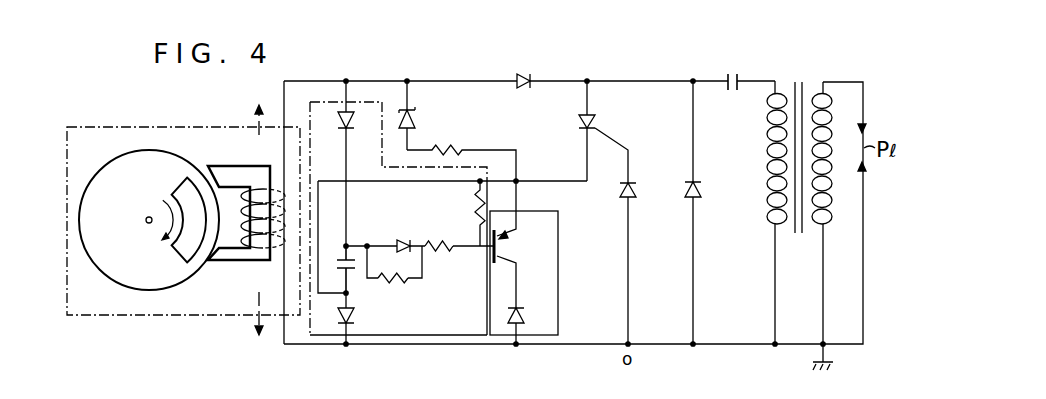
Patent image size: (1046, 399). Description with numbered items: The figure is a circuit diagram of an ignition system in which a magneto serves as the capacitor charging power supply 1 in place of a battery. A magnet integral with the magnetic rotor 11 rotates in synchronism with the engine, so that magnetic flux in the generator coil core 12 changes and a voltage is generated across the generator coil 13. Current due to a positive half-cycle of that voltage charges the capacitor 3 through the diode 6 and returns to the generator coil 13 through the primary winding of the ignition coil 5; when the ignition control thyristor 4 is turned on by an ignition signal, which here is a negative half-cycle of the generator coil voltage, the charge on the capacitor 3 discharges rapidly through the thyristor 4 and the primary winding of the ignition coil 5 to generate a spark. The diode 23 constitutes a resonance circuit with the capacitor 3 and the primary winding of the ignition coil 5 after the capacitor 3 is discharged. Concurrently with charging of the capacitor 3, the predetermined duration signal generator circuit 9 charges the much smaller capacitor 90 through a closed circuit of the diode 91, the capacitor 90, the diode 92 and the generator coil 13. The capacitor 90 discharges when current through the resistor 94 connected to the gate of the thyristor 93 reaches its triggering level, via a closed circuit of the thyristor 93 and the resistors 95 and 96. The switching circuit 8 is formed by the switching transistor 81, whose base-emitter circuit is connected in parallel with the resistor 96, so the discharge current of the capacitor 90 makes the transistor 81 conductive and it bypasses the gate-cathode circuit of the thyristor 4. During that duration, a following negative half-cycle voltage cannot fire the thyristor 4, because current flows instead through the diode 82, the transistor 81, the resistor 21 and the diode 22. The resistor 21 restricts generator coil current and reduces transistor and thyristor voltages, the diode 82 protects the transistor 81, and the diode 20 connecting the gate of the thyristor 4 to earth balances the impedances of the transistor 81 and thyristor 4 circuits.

The capacitor charging power supply 1 is at (108, 127).
The magnetic rotor 11 is at (110, 172).
The generator coil core 12 is at (227, 266).
The generator coil 13 is at (281, 188).
The charging capacitor 3 is at (734, 92).
The ignition control thyristor 4 is at (600, 124).
The ignition coil 5 is at (795, 78).
The diode 6 is at (522, 90).
The switching circuit 8 is at (544, 262).
The predetermined duration signal generator circuit 9 is at (430, 336).
The diode 20 is at (632, 184).
The resistor 21 is at (450, 148).
The diode 22 is at (410, 120).
The diode 23 is at (701, 190).
The switching transistor 81 is at (506, 246).
The diode 82 is at (534, 303).
The capacitor 90 is at (356, 258).
The diode 91 is at (342, 120).
The diode 92 is at (352, 316).
The thyristor 93 is at (404, 240).
The resistor 94 is at (388, 283).
The resistor 95 is at (437, 252).
The resistor 96 is at (478, 212).